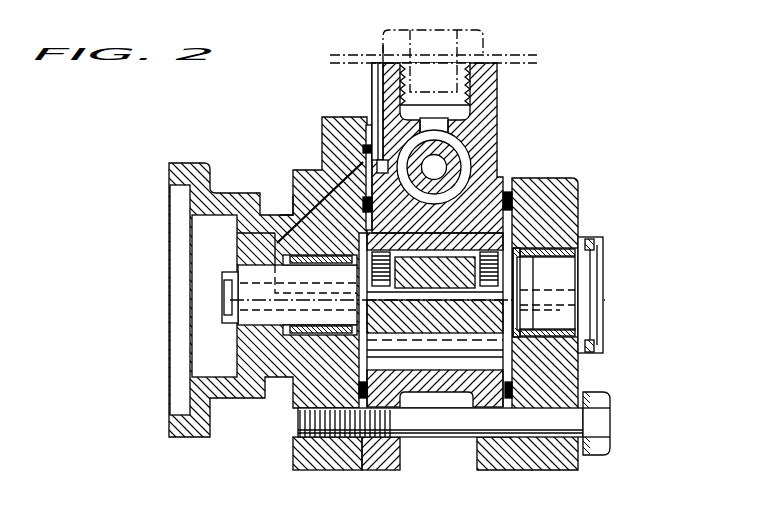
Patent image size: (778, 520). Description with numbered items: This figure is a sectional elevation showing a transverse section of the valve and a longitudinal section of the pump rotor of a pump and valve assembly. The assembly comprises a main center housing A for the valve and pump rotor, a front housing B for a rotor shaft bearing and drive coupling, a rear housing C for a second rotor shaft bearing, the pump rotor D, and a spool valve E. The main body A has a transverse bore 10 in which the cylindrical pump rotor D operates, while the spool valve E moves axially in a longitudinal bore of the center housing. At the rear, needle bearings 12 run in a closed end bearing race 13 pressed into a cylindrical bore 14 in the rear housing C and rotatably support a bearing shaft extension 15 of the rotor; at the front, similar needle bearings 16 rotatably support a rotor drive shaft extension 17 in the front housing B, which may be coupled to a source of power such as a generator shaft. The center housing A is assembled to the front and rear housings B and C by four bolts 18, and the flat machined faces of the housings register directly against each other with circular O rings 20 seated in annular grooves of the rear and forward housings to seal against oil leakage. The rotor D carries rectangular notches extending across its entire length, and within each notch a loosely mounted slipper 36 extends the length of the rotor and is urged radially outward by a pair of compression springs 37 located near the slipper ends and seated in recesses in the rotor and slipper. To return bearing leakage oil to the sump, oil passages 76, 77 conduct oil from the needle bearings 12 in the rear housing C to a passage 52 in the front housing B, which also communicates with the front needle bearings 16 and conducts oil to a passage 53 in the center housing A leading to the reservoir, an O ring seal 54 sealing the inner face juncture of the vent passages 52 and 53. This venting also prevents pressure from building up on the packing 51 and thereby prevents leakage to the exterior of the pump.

The main center housing A is at (497, 125).
The front housing B is at (322, 143).
The rear housing C is at (568, 205).
The pump rotor D is at (417, 353).
The spool valve E is at (446, 170).
The transverse bore 10 is at (460, 235).
The needle bearings 12 is at (575, 248).
The closed end bearing race 13 is at (598, 241).
The cylindrical bore 14 is at (552, 250).
The bearing shaft extension 15 is at (568, 278).
The needle bearings 16 is at (314, 330).
The rotor drive shaft extension 17 is at (232, 322).
The bolts 18 is at (577, 427).
The O rings 20 is at (510, 206).
The slipper 36 is at (468, 246).
The compression springs 37 is at (508, 245).
The packing 51 is at (258, 243).
The passage 52 is at (293, 207).
The passage 53 is at (383, 82).
The O ring seal 54 is at (362, 135).
The oil passage 76 is at (585, 292).
The oil passage 77 is at (280, 290).